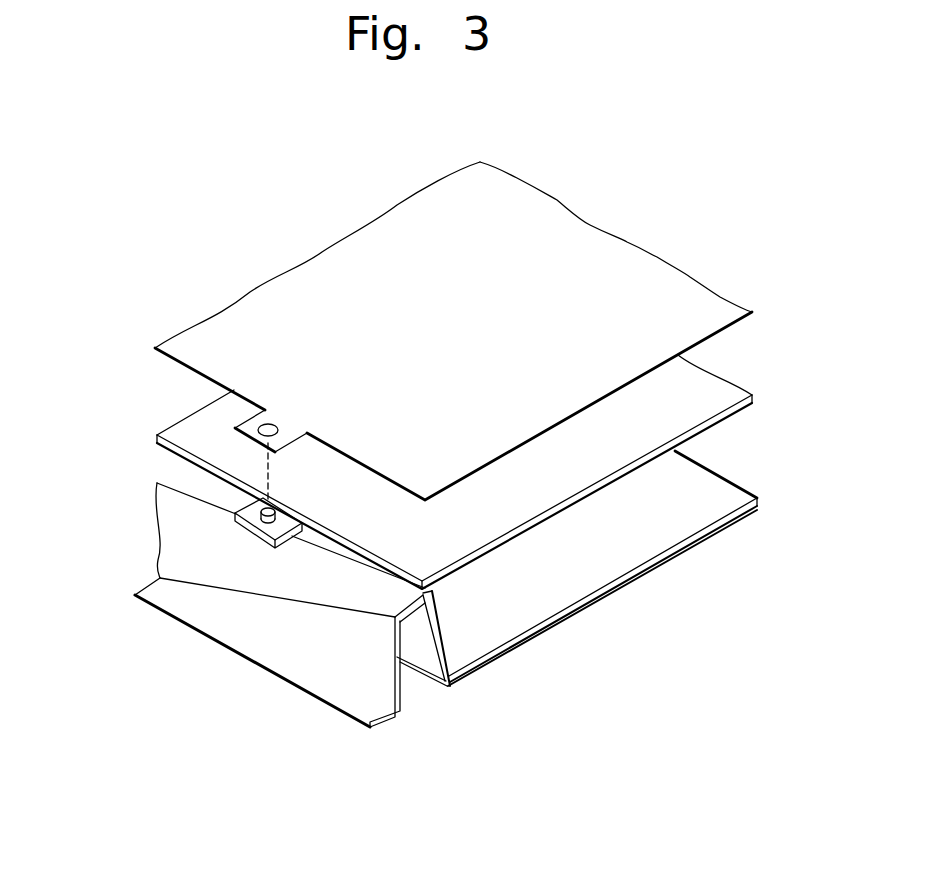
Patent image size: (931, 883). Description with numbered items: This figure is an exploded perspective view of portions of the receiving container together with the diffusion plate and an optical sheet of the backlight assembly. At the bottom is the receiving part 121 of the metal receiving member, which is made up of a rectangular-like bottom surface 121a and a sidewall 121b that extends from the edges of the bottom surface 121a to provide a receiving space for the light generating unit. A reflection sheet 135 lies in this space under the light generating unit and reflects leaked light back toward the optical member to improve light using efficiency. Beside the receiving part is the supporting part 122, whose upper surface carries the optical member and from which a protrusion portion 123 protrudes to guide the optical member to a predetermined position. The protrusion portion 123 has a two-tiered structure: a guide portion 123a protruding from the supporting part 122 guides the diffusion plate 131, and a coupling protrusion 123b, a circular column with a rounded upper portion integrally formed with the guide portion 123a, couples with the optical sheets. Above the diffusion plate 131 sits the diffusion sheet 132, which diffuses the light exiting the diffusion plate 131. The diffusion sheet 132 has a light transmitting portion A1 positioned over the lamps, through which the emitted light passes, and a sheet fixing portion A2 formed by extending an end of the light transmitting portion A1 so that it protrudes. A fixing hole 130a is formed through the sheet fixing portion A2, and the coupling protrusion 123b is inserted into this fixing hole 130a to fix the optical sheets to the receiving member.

The diffusion sheet 132 is at (416, 332).
The diffusion plate 131 is at (195, 431).
The reflection sheet 135 is at (707, 500).
The fixing hole 130a is at (272, 427).
The light transmitting portion A1 is at (332, 273).
The sheet fixing portion A2 is at (195, 355).
The protrusion portion 123 is at (158, 519).
The guide portion 123a is at (236, 519).
The coupling protrusion 123b is at (258, 505).
The supporting part 122 is at (400, 613).
The receiving part 121 is at (590, 622).
The bottom surface 121a is at (509, 648).
The sidewall 121b is at (492, 657).